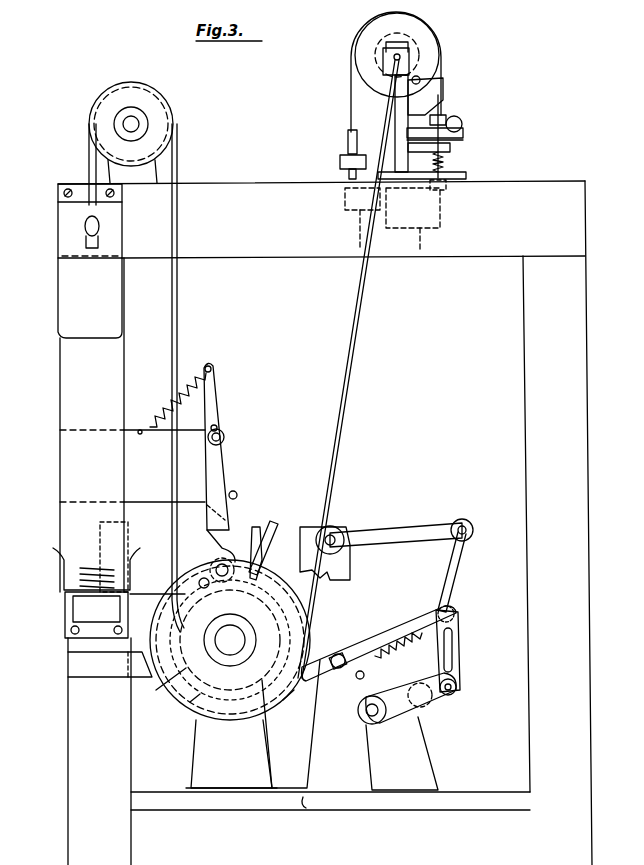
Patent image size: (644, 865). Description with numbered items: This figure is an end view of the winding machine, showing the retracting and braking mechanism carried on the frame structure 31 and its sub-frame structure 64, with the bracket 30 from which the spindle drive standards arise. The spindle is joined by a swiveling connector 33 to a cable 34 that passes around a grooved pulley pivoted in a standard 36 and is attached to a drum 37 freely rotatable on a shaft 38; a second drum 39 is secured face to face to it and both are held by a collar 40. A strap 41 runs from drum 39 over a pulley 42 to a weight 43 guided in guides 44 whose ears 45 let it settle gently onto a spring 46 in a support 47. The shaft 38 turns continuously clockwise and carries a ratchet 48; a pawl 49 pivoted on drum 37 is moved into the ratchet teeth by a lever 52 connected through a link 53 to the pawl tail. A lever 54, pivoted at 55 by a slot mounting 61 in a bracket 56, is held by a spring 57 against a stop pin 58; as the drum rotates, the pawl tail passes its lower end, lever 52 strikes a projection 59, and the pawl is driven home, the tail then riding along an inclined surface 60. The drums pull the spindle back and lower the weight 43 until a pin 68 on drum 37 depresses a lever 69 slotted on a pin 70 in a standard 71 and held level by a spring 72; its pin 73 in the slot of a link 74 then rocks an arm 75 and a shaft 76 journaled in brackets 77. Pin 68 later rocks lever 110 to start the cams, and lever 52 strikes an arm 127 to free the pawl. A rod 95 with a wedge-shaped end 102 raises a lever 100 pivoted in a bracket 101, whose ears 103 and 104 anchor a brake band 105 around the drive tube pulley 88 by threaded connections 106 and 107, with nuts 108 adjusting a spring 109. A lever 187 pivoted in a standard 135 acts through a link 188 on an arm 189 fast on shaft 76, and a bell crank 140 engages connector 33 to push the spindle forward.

The bracket 30 is at (440, 86).
The frame structure 31 is at (236, 183).
The swiveling connector 33 is at (395, 50).
The cable 34 is at (345, 405).
The standard 36 is at (410, 100).
The drum 37 is at (240, 722).
The shaft 38 is at (232, 632).
The second drum 39 is at (162, 695).
The collar 40 is at (225, 664).
The strap 41 is at (178, 161).
The pulley 42 is at (156, 108).
The weight 43 is at (60, 298).
The guides 44 is at (60, 244).
The ears 45 is at (56, 553).
The spring 46 is at (88, 566).
The support 47 is at (73, 607).
The ratchet 48 is at (181, 710).
The pawl 49 is at (210, 568).
The lever 52 is at (275, 522).
The link 53 is at (256, 556).
The lever 54 is at (214, 395).
The pivot 55 is at (224, 437).
The bracket 56 is at (130, 430).
The spring 57 is at (162, 405).
The stop pin 58 is at (236, 492).
The projection 59 is at (226, 516).
The inclined surface 60 is at (230, 530).
The slot mounting 61 is at (218, 428).
The sub-frame structure 64 is at (315, 813).
The pin 68 is at (294, 705).
The lever 69 is at (380, 634).
The pin 70 is at (340, 652).
The standard 71 is at (316, 742).
The spring 72 is at (389, 656).
The pin 73 is at (455, 612).
The link 74 is at (458, 645).
The arm 75 is at (452, 695).
The shaft 76 is at (360, 720).
The brackets 77 is at (420, 763).
The pulley 88 is at (420, 37).
The rod 95 is at (446, 115).
The lever 100 is at (463, 128).
The bracket 101 is at (345, 190).
The wedge-shaped end 102 is at (463, 137).
The ear 103 is at (340, 161).
The ear 104 is at (450, 147).
The brake band 105 is at (350, 90).
The threaded connection 106 is at (347, 140).
The threaded connection 107 is at (455, 110).
The nuts 108 is at (446, 185).
The spring 109 is at (445, 162).
The lever 110 is at (152, 592).
The arm 127 is at (134, 680).
The standard 135 is at (345, 560).
The bell crank 140 is at (383, 50).
The lever 187 is at (412, 519).
The link 188 is at (454, 562).
The arm 189 is at (428, 706).